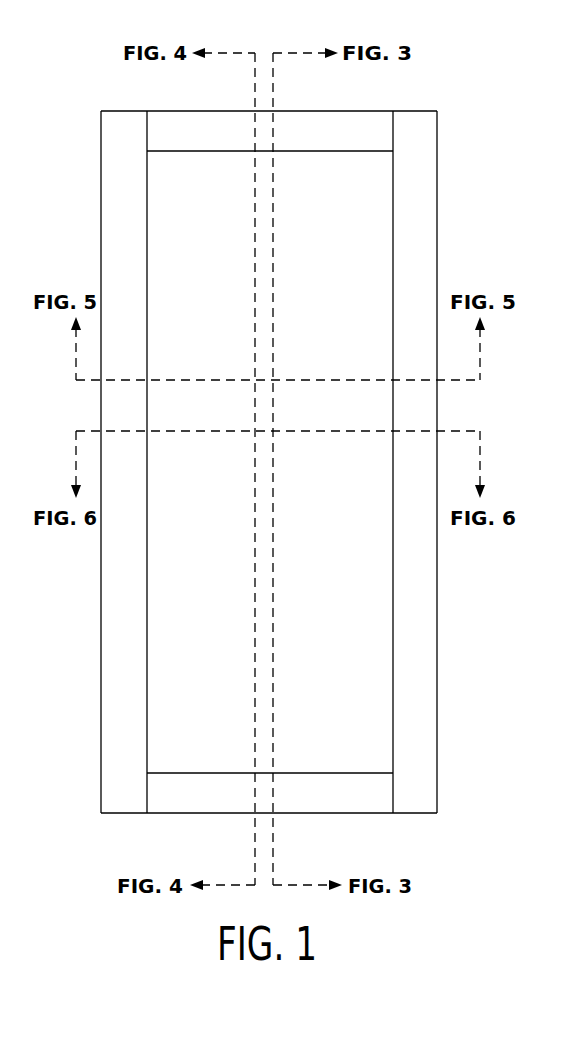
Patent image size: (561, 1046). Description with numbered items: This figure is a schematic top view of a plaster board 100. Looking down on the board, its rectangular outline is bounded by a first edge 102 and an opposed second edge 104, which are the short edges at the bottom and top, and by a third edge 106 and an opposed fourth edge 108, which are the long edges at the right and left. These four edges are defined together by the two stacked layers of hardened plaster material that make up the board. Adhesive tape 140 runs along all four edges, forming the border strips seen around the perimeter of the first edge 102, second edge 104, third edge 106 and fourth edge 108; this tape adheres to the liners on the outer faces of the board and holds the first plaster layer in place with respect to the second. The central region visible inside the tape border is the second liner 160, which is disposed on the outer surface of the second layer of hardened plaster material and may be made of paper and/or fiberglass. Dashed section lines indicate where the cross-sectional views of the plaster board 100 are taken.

The plaster board 100 is at (278, 461).
The first edge 102 is at (127, 815).
The second edge 104 is at (421, 111).
The third edge 106 is at (438, 607).
The fourth edge 108 is at (100, 650).
The adhesive tape 140 is at (205, 125).
The second liner 160 is at (210, 213).